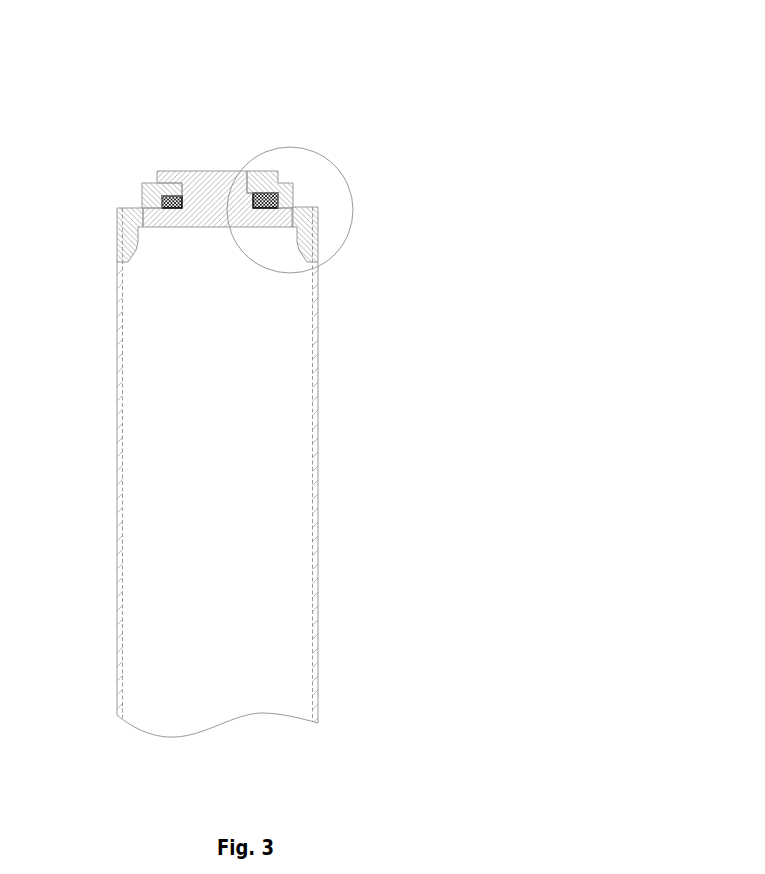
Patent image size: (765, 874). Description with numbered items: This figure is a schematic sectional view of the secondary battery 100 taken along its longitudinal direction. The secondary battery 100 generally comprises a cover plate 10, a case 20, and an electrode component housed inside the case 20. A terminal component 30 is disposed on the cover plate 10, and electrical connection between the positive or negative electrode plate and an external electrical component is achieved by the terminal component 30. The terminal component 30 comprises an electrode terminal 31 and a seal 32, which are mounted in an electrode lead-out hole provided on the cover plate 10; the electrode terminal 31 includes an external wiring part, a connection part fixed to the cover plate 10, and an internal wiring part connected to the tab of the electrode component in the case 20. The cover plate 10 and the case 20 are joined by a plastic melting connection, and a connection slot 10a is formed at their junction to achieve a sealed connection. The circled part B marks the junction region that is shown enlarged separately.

The secondary battery 100 is at (318, 82).
The cover plate 10 is at (142, 188).
The connection slot 10a is at (309, 206).
The case 20 is at (318, 433).
The terminal component 30 is at (127, 103).
The electrode terminal 31 is at (202, 175).
The seal 32 is at (160, 183).
The part B is at (264, 149).